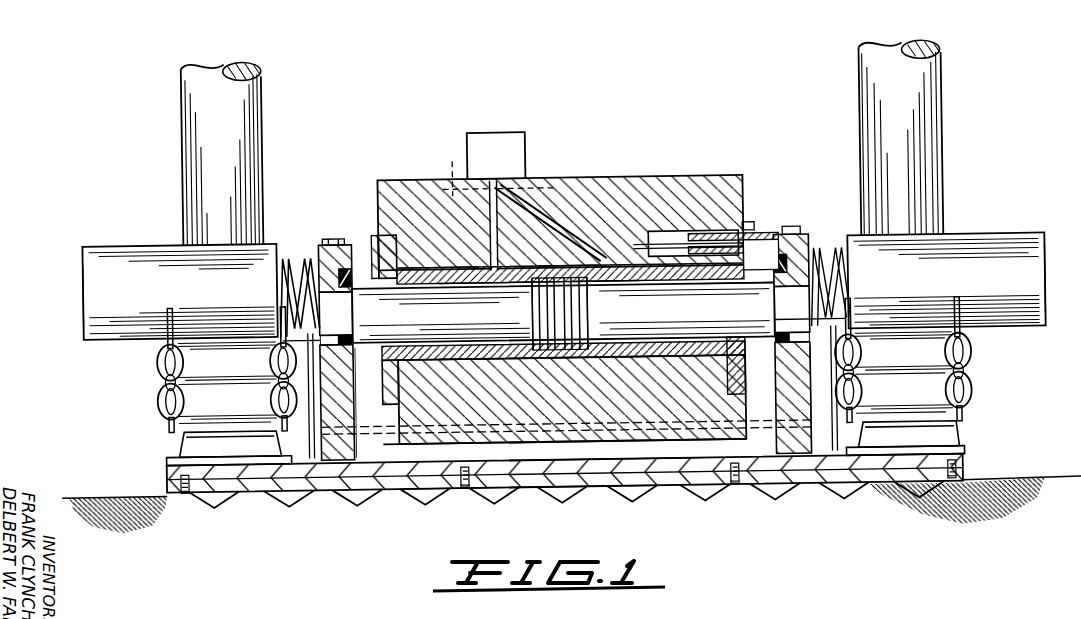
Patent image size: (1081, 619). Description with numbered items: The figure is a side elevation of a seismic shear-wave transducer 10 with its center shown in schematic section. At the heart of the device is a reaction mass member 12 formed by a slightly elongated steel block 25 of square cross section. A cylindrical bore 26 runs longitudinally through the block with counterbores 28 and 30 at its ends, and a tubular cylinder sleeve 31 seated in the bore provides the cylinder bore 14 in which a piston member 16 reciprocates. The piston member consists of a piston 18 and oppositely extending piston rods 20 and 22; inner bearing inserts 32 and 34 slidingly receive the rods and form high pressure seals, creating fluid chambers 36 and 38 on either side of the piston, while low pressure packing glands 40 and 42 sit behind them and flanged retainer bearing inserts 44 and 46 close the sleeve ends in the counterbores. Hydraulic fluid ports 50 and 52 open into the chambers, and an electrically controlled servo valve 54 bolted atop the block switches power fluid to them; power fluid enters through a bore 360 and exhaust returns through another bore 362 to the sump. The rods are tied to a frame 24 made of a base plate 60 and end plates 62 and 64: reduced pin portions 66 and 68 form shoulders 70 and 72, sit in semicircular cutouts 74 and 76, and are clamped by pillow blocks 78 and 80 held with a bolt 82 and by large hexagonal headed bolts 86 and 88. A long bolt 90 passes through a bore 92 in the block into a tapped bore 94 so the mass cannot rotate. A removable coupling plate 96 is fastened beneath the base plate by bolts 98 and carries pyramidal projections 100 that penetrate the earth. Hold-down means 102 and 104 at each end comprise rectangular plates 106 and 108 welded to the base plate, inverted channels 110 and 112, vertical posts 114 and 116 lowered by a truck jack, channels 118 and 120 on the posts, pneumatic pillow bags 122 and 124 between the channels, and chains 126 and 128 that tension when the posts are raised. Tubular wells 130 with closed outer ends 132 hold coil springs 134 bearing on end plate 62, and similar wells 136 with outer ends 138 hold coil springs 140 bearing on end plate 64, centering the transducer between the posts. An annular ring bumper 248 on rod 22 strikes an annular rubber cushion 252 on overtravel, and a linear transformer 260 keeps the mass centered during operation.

The transducer 10 is at (384, 143).
The reaction mass member 12 is at (547, 211).
The cylinder bore 14 is at (604, 357).
The piston member 16 is at (498, 352).
The piston 18 is at (562, 356).
The piston rod 20 is at (478, 356).
The piston rod 22 is at (650, 355).
The frame 24 is at (395, 488).
The block 25 is at (430, 195).
The cylindrical bore 26 is at (452, 266).
The counterbore 28 is at (395, 242).
The counterbore 30 is at (727, 385).
The tubular cylinder sleeve 31 is at (563, 270).
The inner bearing insert 32 is at (478, 274).
The inner bearing insert 34 is at (640, 247).
The fluid chamber 36 is at (532, 270).
The fluid chamber 38 is at (592, 276).
The low pressure packing gland 40 is at (428, 360).
The low pressure packing gland 42 is at (700, 360).
The retainer bearing insert 44 is at (380, 243).
The retainer bearing insert 46 is at (745, 358).
The hydraulic fluid port 50 is at (493, 242).
The hydraulic fluid port 52 is at (577, 227).
The servo valve 54 is at (500, 132).
The base plate 60 is at (540, 478).
The end plate 62 is at (330, 405).
The end plate 64 is at (810, 410).
The pin portion 66 is at (342, 326).
The pin portion 68 is at (797, 321).
The shoulder 70 is at (358, 292).
The shoulder 72 is at (768, 296).
The semicircular cutout 74 is at (306, 370).
The semicircular cutout 76 is at (830, 362).
The pillow block 78 is at (323, 258).
The pillow block 80 is at (805, 256).
The bolt 82 is at (336, 236).
The hexagonal headed bolt 86 is at (310, 338).
The hexagonal headed bolt 88 is at (812, 323).
The long bolt 90 is at (362, 437).
The bore 92 is at (475, 430).
The tapped bore 94 is at (782, 422).
The coupling plate 96 is at (606, 478).
The bolt 98 is at (183, 490).
The projection 100 is at (220, 493).
The hold-down means 102 is at (195, 370).
The hold-down means 104 is at (927, 359).
The rectangular plate 106 is at (163, 459).
The rectangular plate 108 is at (965, 450).
The inverted channel 110 is at (176, 443).
The inverted channel 112 is at (960, 433).
The vertical post 114 is at (195, 143).
The vertical post 116 is at (922, 156).
The channel 118 is at (166, 331).
The channel 120 is at (960, 308).
The pneumatic pillow bag 122 is at (158, 402).
The pneumatic pillow bag 124 is at (972, 351).
The chain 126 is at (157, 425).
The chain 128 is at (965, 412).
The tubular well 130 is at (135, 244).
The outer end 132 is at (84, 290).
The coil spring 134 is at (290, 250).
The tubular well 136 is at (984, 247).
The outer end 138 is at (1050, 250).
The coil spring 140 is at (830, 274).
The annular ring bumper 248 is at (760, 244).
The annular rubber cushion 252 is at (770, 258).
The linear transformer 260 is at (721, 232).
The bore 360 is at (455, 168).
The bore 362 is at (545, 172).